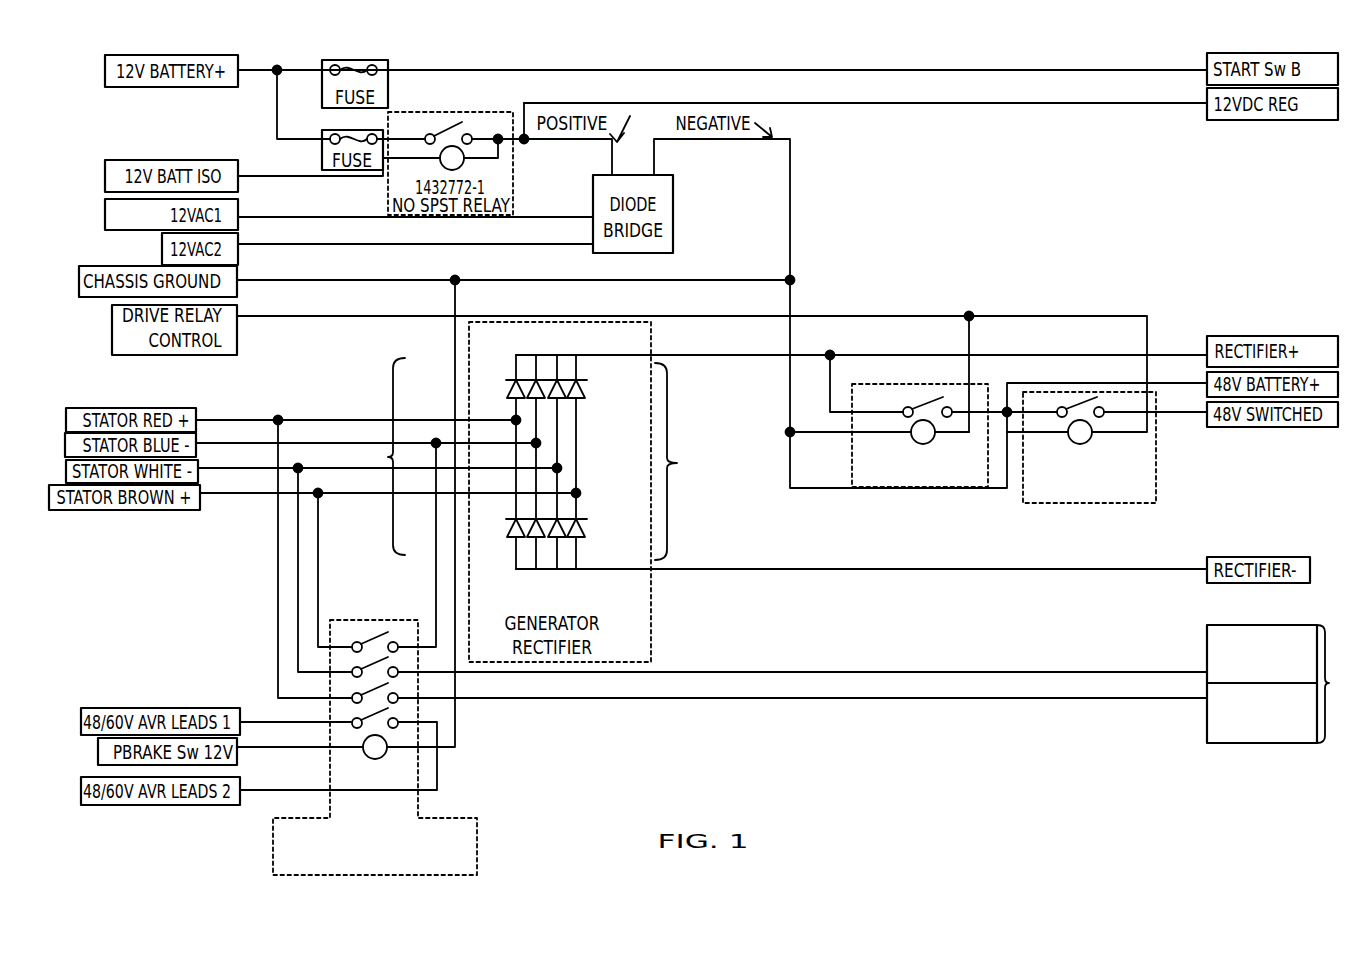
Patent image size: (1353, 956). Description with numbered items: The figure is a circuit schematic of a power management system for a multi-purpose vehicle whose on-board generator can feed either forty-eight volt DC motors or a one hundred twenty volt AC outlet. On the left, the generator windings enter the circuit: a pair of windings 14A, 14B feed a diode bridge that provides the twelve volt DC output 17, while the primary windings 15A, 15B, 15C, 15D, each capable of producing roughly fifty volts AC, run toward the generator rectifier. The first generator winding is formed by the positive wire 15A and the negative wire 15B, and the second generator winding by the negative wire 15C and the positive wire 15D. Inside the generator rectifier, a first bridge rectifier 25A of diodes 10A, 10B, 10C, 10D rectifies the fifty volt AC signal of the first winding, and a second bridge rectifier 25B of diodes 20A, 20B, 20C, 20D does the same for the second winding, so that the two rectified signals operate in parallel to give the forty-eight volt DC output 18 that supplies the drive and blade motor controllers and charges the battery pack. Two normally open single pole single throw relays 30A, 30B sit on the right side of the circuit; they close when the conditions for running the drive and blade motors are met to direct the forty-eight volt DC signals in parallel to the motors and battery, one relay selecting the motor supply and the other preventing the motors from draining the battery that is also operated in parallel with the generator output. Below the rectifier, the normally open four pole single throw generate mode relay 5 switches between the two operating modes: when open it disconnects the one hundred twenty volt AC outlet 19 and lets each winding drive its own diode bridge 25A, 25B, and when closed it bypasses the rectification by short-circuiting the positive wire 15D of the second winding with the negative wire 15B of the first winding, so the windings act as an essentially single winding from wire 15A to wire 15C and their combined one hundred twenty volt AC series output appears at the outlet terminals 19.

The multi-pole switch 5 is at (375, 759).
The diode 10A is at (512, 392).
The diode 10B is at (512, 537).
The diode 10C is at (537, 388).
The diode 10D is at (537, 538).
The generator winding 14A is at (303, 217).
The generator winding 14B is at (303, 244).
The positive winding wire of first generator winding 15A is at (262, 420).
The negative winding wire of first generator winding 15B is at (262, 443).
The negative winding wire of second generator winding 15C is at (262, 468).
The positive winding wire of second generator winding 15D is at (262, 493).
The 12 V DC output 17 is at (1148, 103).
The 48 V DC output 18 is at (1158, 412).
The 120 VAC outlet 19 is at (1276, 684).
The diode 20A is at (583, 387).
The diode 20B is at (583, 525).
The diode 20C is at (555, 398).
The diode 20D is at (555, 537).
The first bridge rectifier 25A is at (388, 457).
The second bridge rectifier 25B is at (682, 461).
The single pole single throw switch 30A is at (937, 437).
The single pole single throw switch 30B is at (1092, 437).